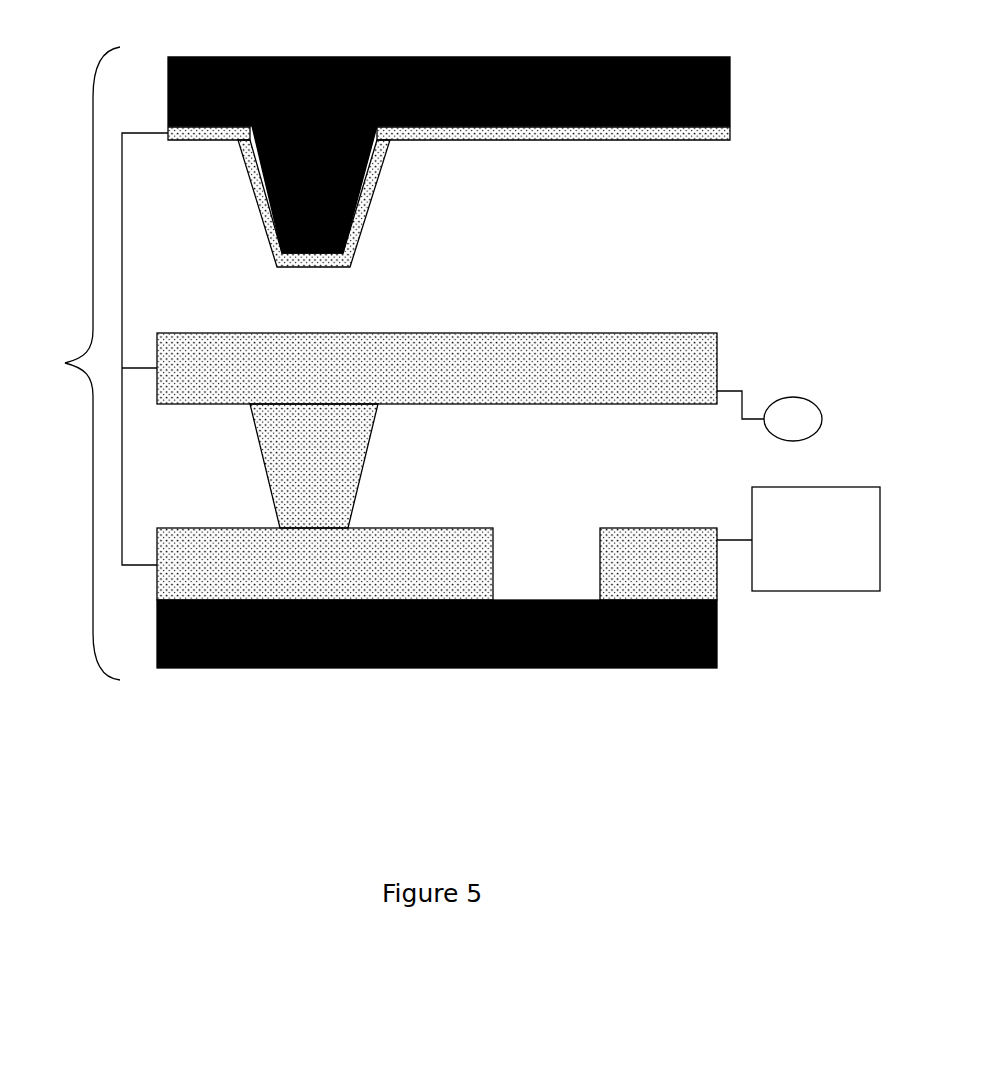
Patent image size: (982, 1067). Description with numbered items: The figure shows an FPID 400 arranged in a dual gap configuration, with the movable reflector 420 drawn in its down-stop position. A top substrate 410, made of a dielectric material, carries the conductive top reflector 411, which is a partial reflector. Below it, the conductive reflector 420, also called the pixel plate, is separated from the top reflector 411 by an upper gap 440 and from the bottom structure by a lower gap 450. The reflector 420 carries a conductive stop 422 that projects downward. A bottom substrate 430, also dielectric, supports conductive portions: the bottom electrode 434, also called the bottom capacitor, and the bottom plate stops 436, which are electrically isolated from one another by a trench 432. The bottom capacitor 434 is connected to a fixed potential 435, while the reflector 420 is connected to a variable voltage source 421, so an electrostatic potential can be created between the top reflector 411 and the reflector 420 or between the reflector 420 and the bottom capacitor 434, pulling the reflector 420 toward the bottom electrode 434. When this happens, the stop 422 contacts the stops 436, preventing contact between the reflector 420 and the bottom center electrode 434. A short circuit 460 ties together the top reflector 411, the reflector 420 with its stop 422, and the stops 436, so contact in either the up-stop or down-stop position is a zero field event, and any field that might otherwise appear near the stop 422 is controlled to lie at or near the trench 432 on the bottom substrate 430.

The FPID 400 is at (69, 363).
The top substrate 410 is at (448, 57).
The top reflector 411 is at (648, 150).
The reflector 420 is at (452, 380).
The variable voltage source 421 is at (795, 397).
The stop 422 is at (265, 467).
The bottom substrate 430 is at (717, 632).
The trench 432 is at (543, 540).
The bottom electrode 434 is at (717, 557).
The fixed potential 435 is at (799, 576).
The bottom plate stops 436 is at (342, 576).
The upper gap 440 is at (448, 333).
The lower gap 450 is at (448, 404).
The circuit 460 is at (124, 282).